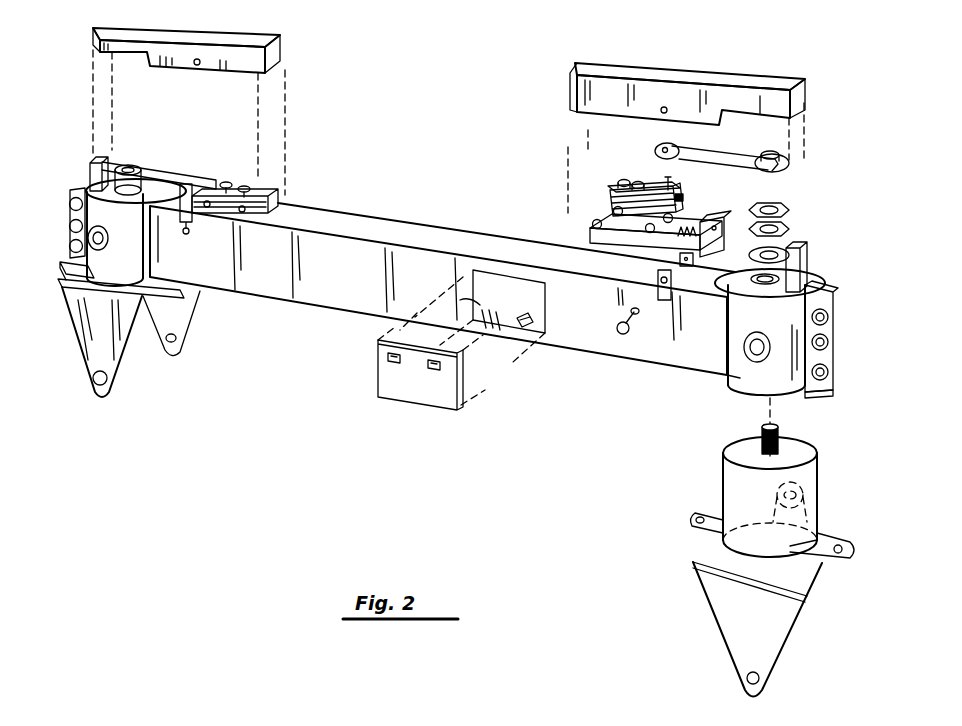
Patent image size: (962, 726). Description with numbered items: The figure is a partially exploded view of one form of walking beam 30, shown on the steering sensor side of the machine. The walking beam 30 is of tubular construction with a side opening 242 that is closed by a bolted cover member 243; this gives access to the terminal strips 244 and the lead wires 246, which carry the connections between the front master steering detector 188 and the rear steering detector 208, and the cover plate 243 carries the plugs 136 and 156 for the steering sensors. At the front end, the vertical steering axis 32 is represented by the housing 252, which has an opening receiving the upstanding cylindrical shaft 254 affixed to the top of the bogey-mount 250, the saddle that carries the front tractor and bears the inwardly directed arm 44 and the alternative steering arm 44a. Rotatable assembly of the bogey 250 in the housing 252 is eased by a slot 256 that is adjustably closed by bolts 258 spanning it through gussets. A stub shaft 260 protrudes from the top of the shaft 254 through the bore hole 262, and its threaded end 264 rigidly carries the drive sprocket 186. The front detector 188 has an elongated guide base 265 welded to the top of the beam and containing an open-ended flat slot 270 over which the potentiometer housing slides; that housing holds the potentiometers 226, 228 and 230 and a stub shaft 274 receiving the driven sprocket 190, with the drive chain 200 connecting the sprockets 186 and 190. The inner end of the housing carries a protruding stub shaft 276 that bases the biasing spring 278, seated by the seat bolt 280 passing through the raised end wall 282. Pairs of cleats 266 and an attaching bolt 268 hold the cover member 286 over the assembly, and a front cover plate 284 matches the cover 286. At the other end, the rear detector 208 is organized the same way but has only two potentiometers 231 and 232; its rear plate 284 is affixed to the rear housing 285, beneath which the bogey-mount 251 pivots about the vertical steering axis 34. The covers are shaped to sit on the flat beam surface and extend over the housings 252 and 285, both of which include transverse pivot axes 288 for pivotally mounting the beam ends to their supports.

The walking beam 30 is at (442, 289).
The vertical steering axis 32 is at (730, 382).
The vertical steering axis 34 is at (66, 272).
The arm 44 is at (805, 498).
The steering arm 44a is at (836, 560).
The plug 136 is at (442, 365).
The plug 156 is at (385, 356).
The drive sprocket 186 is at (786, 158).
The front master steering detector 188 is at (706, 214).
The driven sprocket 190 is at (668, 144).
The drive chain 200 is at (730, 156).
The rear steering detector 208 is at (268, 198).
The potentiometer 226 is at (654, 183).
The potentiometer 228 is at (620, 181).
The potentiometer 230 is at (634, 183).
The potentiometer 231 is at (248, 188).
The potentiometer 232 is at (230, 183).
The side opening 242 is at (548, 307).
The cover member 243 is at (460, 412).
The terminal strips 244 is at (525, 328).
The lead wires 246 is at (478, 305).
The bogey-mount 250 is at (843, 528).
The bogey-mount 251 is at (95, 350).
The housing 252 is at (735, 392).
The cylindrical shaft 254 is at (815, 452).
The slot 256 is at (849, 381).
The bolts 258 is at (849, 336).
The stub shaft 260 is at (780, 430).
The bore hole 262 is at (732, 298).
The threaded end 264 is at (760, 436).
The guide base 265 is at (592, 232).
The cleats 266 is at (700, 249).
The attaching bolt 268 is at (620, 332).
The slot 270 is at (612, 192).
The stub shaft 274 is at (672, 170).
The stub shaft 276 is at (690, 195).
The biasing spring 278 is at (665, 223).
The seat bolt 280 is at (785, 252).
The raised end wall 282 is at (775, 200).
The cover plate 284 is at (117, 157).
The rear housing 285 is at (92, 214).
The cover member 286 is at (168, 63).
The transverse pivot axes 288 is at (112, 232).